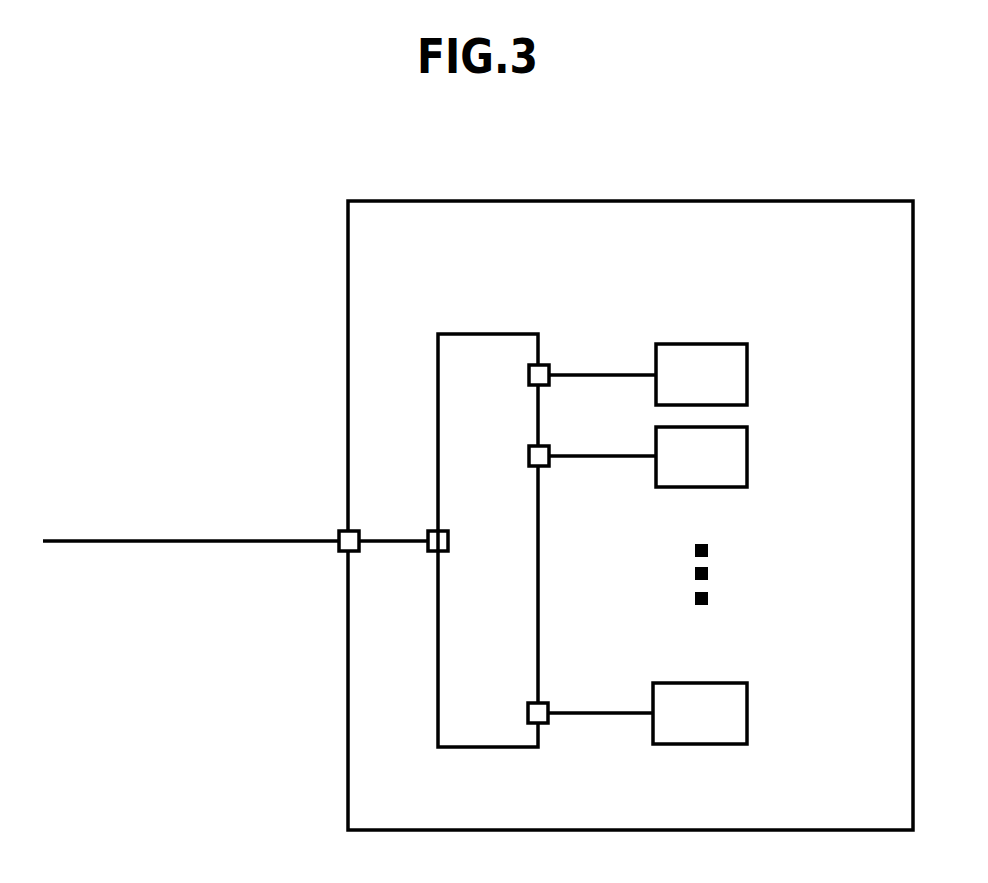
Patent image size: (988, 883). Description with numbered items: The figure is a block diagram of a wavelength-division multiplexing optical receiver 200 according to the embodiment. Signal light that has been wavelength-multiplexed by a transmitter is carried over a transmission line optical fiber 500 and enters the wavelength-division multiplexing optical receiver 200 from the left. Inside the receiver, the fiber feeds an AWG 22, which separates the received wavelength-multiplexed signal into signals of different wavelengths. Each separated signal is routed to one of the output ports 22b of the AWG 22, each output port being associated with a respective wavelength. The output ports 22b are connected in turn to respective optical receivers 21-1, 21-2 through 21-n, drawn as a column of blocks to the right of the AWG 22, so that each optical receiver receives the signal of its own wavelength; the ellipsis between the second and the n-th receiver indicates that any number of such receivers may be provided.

The wavelength-division multiplexing optical receiver 200 is at (348, 375).
The transmission line optical fiber 500 is at (90, 540).
The AWG 22 is at (494, 334).
The output ports 22b is at (547, 466).
The optical receiver 21-1 is at (747, 360).
The optical receiver 21-2 is at (747, 446).
The optical receiver 21-n is at (747, 709).